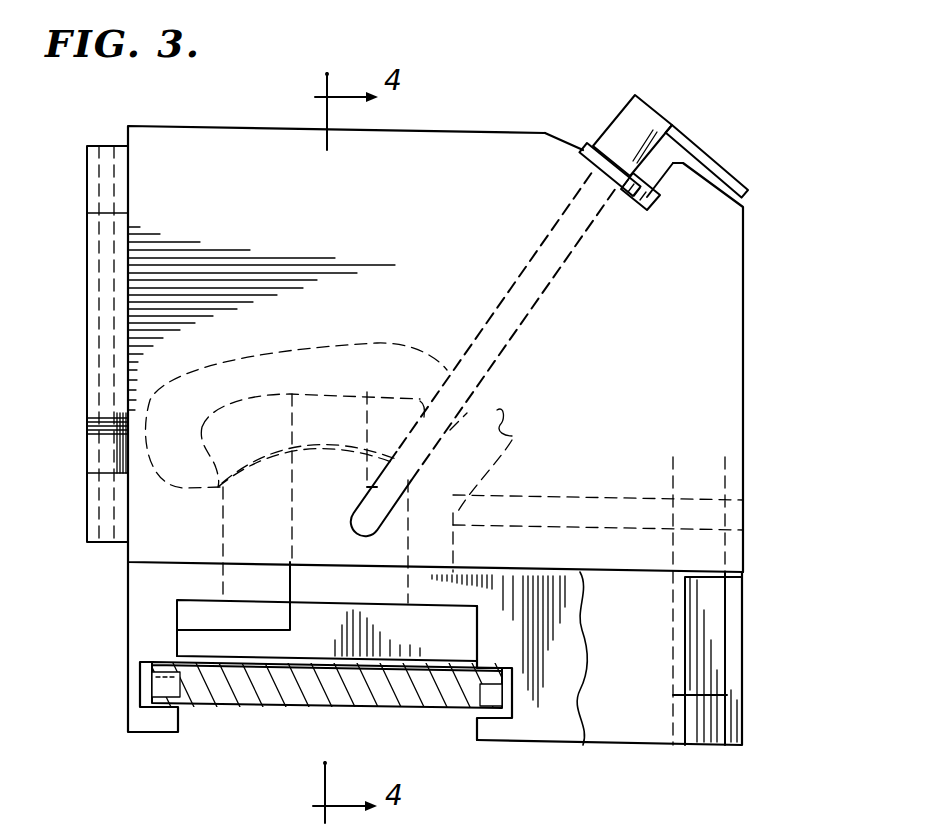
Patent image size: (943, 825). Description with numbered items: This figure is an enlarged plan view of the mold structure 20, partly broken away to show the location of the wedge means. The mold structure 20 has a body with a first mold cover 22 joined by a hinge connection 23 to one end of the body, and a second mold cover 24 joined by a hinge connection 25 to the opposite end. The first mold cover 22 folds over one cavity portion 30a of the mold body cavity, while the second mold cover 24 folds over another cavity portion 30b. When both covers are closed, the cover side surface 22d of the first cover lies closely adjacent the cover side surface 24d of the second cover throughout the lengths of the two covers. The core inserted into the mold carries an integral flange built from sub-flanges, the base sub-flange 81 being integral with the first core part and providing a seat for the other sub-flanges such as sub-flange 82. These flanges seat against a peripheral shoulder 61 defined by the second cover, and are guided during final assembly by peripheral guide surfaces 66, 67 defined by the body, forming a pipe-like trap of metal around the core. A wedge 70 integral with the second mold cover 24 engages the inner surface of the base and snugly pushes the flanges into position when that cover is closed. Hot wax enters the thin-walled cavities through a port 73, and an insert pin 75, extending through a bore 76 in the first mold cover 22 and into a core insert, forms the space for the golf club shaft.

The mold structure 20 is at (486, 105).
The first mold cover 22 is at (748, 314).
The cover side surface 22d is at (499, 571).
The hinge connection 23 is at (100, 369).
The second mold cover 24 is at (547, 740).
The cover side surface 24d is at (606, 574).
The hinge connection 25 is at (727, 621).
The mold body cavity portion 30a is at (497, 413).
The mold body cavity portion 30b is at (224, 585).
The peripheral shoulder 61 is at (320, 605).
The peripheral guide surface 66 is at (178, 652).
The peripheral guide surface 67 is at (475, 622).
The wedge 70 is at (226, 708).
The port 73 is at (756, 517).
The insert pin 75 is at (538, 287).
The bore 76 is at (567, 217).
The sub-flange 81 is at (306, 643).
The sub-flange 82 is at (257, 612).